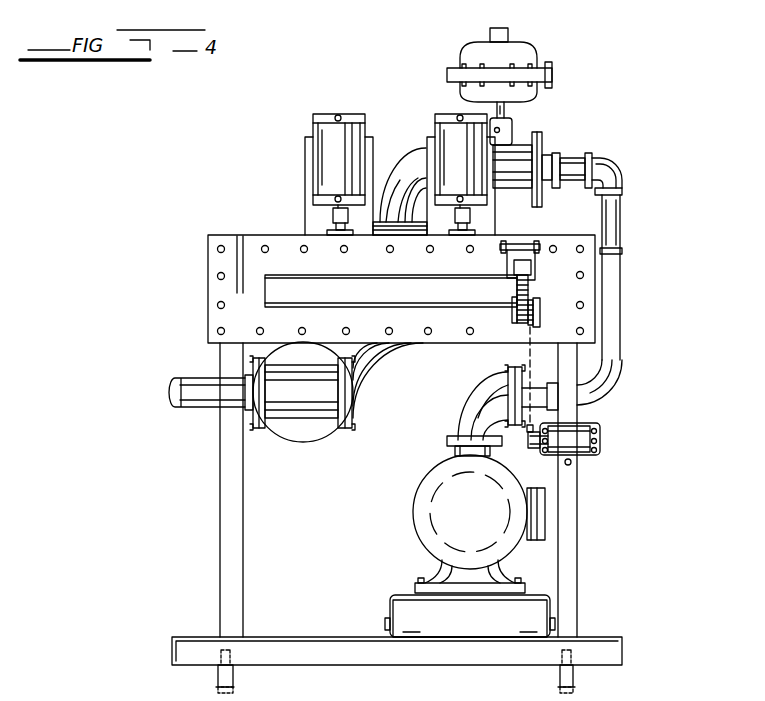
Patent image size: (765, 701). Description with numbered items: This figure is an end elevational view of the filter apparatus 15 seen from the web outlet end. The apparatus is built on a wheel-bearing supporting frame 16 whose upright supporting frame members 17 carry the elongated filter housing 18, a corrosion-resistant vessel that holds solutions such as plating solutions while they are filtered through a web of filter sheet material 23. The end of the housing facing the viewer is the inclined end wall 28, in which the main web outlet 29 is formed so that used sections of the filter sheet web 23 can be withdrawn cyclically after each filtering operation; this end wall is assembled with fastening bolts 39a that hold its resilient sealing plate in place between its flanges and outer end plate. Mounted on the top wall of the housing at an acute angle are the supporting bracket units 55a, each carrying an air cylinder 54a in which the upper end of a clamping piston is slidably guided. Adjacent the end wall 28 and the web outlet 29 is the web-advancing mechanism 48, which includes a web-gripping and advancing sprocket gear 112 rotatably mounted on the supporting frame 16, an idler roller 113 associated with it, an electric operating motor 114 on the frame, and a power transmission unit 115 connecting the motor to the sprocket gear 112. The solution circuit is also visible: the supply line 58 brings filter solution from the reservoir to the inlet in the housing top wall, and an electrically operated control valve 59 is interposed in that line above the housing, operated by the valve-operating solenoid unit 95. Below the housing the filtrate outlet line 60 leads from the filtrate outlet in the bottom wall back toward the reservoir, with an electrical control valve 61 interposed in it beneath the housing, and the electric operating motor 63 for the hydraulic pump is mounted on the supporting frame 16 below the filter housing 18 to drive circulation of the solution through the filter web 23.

The filter apparatus 15 is at (620, 158).
The supporting frame 16 is at (582, 539).
The upright supporting frame members 17 is at (569, 581).
The filter housing 18 is at (206, 331).
The filter sheet web 23 is at (354, 301).
The end wall 28 is at (206, 298).
The main web outlet 29 is at (303, 276).
The bolts 39a is at (217, 249).
The web-advancing mechanism 48 is at (542, 289).
The air cylinder 54a is at (338, 135).
The supporting bracket unit 55a is at (300, 203).
The supply line 58 is at (405, 178).
The control valve 59 is at (540, 134).
The filtrate outlet line 60 is at (193, 392).
The control valve 61 is at (305, 436).
The electric operating motor 63 is at (438, 517).
The valve-operating solenoid unit 95 is at (512, 46).
The sprocket gear 112 is at (520, 323).
The idler roller 113 is at (512, 287).
The electric operating motor 114 is at (598, 453).
The power transmission unit 115 is at (507, 358).